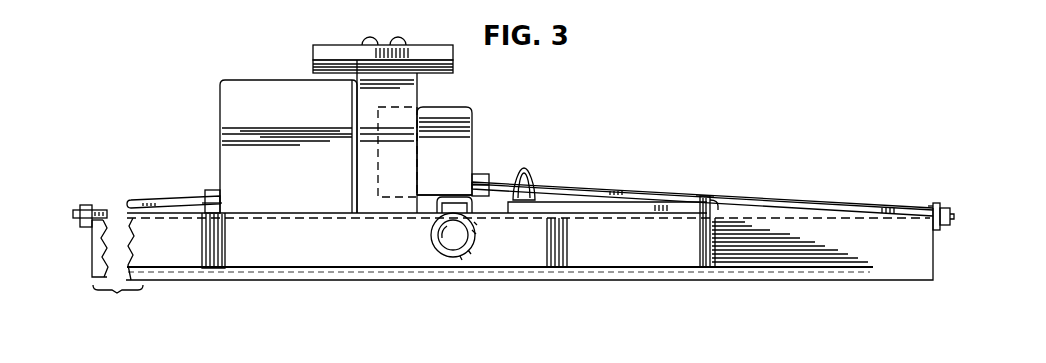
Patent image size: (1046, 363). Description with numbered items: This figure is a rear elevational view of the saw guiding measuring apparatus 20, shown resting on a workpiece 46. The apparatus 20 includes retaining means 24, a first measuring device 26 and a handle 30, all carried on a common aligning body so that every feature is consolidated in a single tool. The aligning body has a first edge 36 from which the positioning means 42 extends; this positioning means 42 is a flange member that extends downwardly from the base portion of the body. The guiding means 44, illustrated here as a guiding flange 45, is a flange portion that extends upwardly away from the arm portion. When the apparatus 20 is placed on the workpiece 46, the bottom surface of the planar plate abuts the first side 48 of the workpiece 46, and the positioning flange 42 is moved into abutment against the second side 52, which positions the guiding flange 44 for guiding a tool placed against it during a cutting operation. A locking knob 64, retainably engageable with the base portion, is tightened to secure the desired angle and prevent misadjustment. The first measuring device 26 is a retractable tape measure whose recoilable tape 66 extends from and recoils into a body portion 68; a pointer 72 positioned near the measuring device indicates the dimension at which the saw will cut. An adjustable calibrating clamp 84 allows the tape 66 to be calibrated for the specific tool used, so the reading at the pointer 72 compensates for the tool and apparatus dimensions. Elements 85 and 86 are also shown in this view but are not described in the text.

The tool guiding measuring apparatus 20 is at (600, 121).
The retaining means 24 is at (477, 240).
The first measuring device 26 is at (477, 113).
The handle 30 is at (312, 53).
The first edge 36 is at (610, 207).
The positioning means 42 is at (670, 266).
The guiding means 44 is at (700, 195).
The guiding flange 45 is at (716, 208).
The workpiece 46 is at (860, 282).
The first side 48 is at (767, 220).
The second side 52 is at (884, 248).
The locking knob 64 is at (528, 170).
The tape 66 is at (180, 200).
The body portion 68 is at (228, 98).
The pointer 72 is at (208, 190).
The adjustable calibrating clamp 84 is at (77, 205).
The clamp fitting 85 is at (930, 207).
The mounting region 86 is at (90, 258).